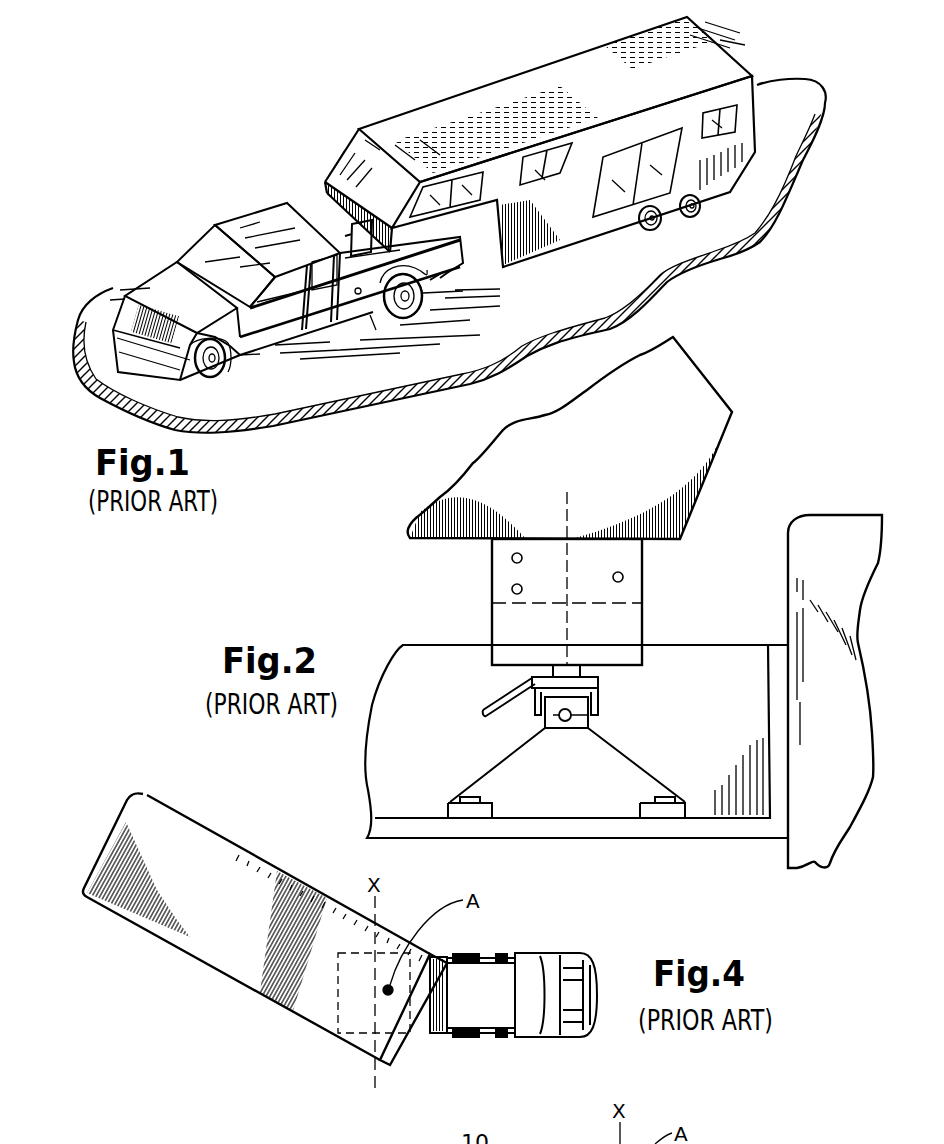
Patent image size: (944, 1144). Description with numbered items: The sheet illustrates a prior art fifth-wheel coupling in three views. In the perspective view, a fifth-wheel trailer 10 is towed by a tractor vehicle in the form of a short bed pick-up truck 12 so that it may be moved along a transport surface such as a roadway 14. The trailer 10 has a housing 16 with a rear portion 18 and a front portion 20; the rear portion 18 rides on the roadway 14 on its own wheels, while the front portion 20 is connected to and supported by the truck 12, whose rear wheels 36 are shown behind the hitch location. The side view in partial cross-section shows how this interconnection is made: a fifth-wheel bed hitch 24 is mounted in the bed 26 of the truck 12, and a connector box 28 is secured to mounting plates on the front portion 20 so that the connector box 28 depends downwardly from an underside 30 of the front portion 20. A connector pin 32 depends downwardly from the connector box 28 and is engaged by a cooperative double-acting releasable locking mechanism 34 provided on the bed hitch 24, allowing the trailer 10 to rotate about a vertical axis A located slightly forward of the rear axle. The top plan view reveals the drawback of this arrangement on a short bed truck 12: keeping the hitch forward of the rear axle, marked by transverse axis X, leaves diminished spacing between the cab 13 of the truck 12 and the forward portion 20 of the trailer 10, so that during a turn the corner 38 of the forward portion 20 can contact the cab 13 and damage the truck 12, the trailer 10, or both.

In FIG. 1, the fifth-wheel trailer 10 is at (575, 133).
In FIG. 2, the fifth-wheel trailer 10 is at (562, 466).
In FIG. 4, the fifth-wheel trailer 10 is at (288, 937).
In FIG. 1, the short bed pick-up truck 12 is at (252, 212).
In FIG. 2, the short bed pick-up truck 12 is at (825, 530).
In FIG. 4, the short bed pick-up truck 12 is at (540, 992).
In FIG. 4, the cab 13 is at (485, 975).
In FIG. 1, the roadway 14 is at (785, 97).
In FIG. 1, the housing 16 is at (592, 65).
In FIG. 1, the rear portion 18 is at (695, 50).
In FIG. 1, the front portion 20 is at (450, 110).
In FIG. 2, the front portion 20 is at (700, 400).
In FIG. 4, the front portion 20 is at (400, 1040).
In FIG. 2, the fifth-wheel bed hitch 24 is at (642, 740).
In FIG. 2, the bed 26 is at (420, 805).
In FIG. 1, the connector box 28 is at (335, 222).
In FIG. 2, the connector box 28 is at (628, 594).
In FIG. 2, the underside 30 is at (447, 540).
In FIG. 2, the connector pin 32 is at (553, 672).
In FIG. 2, the double-acting releasable locking mechanism 34 is at (520, 712).
In FIG. 1, the rear wheels 36 is at (414, 305).
In FIG. 4, the corner 38 is at (453, 980).